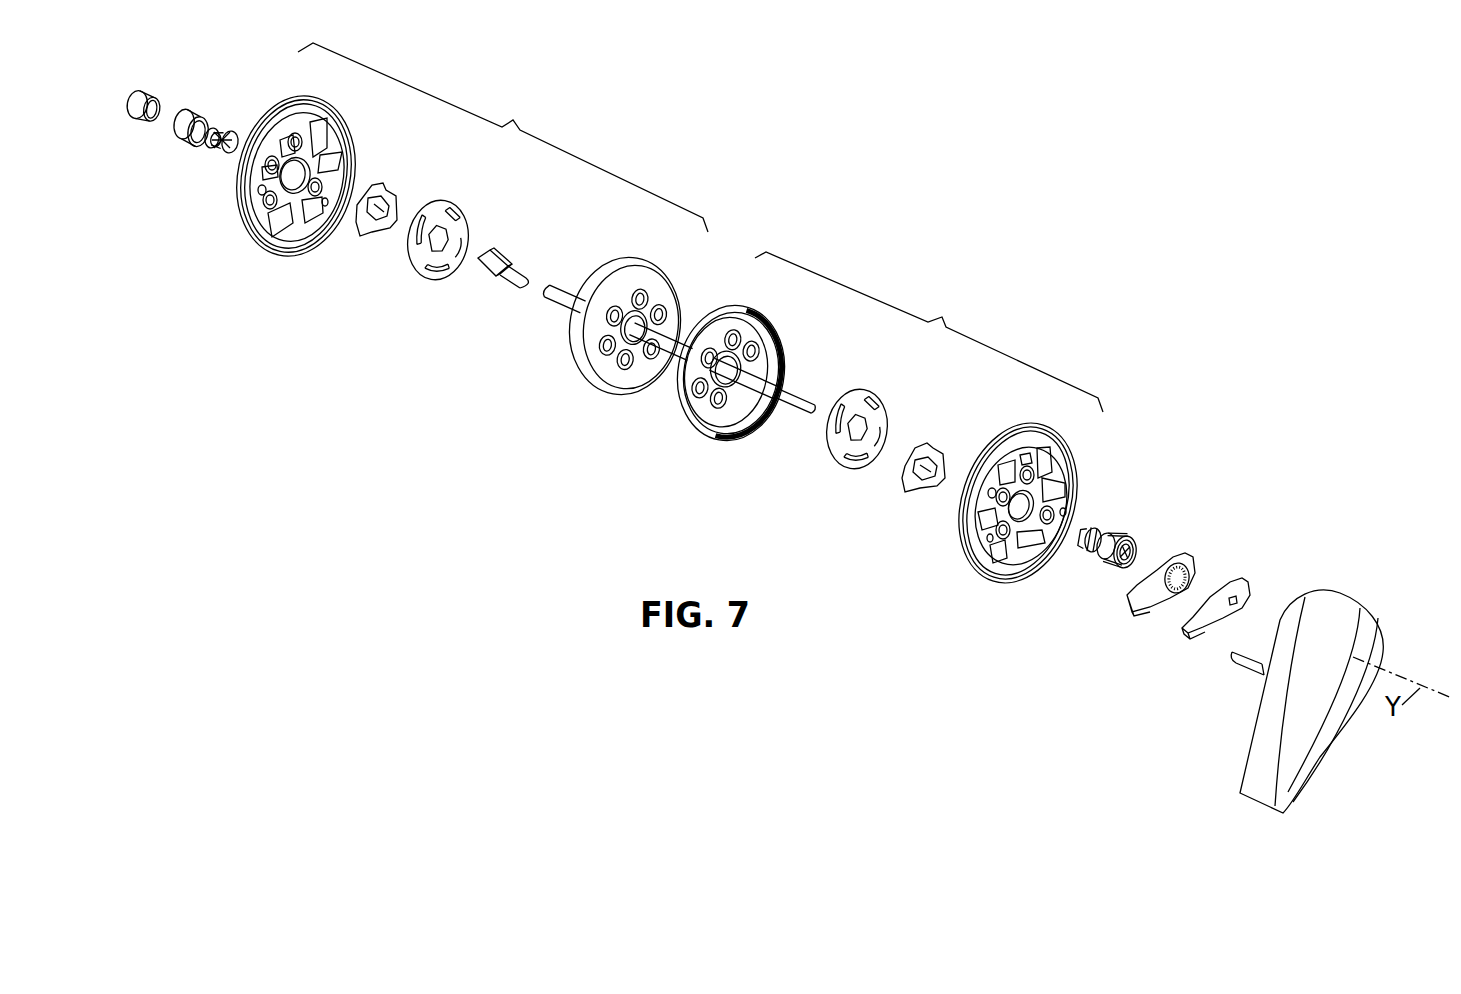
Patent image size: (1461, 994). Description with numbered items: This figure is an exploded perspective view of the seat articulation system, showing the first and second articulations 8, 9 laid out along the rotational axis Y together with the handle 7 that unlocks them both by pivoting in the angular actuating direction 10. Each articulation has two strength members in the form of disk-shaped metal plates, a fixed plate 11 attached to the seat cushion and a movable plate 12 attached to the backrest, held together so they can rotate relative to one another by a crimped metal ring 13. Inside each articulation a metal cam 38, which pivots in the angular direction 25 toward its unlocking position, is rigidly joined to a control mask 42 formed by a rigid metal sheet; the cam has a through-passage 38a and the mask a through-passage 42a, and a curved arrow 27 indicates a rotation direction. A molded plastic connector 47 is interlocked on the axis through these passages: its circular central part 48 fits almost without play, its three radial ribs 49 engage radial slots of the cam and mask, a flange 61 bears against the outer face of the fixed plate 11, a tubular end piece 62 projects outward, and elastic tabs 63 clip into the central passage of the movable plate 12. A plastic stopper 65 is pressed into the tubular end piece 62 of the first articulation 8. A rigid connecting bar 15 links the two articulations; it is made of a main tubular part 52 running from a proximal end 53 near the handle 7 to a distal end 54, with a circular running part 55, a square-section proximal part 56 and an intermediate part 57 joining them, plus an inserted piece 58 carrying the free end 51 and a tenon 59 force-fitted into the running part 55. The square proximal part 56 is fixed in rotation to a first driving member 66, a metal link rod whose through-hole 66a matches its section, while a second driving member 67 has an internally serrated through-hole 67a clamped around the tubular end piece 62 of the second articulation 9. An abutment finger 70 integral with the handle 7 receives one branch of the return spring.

The handle 7 is at (1327, 715).
The first articulation 8 is at (503, 137).
The second articulation 9 is at (929, 332).
The angular actuating direction 10 is at (1207, 773).
The fixed plate 11 is at (297, 227).
The movable plate 12 is at (622, 378).
The crimped metal ring 13 is at (256, 247).
The connecting bar 15 is at (538, 310).
The angular direction 25 is at (373, 156).
The rotation direction 27 is at (349, 262).
The cam 38 is at (380, 232).
The through-passage of the cam 38a is at (396, 199).
The control mask 42 is at (421, 264).
The through-passage of the control mask 42a is at (450, 228).
The connector 47 is at (222, 97).
The central part 48 is at (195, 157).
The radial ribs 49 is at (212, 143).
The free end 51 is at (487, 268).
The main tubular part 52 is at (794, 380).
The proximal end 53 is at (812, 414).
The distal end 54 is at (545, 285).
The running part 55 is at (673, 355).
The proximal part 56 is at (808, 417).
The intermediate part 57 is at (767, 413).
The inserted piece 58 is at (521, 253).
The tenon 59 is at (517, 279).
The flange 61 is at (192, 150).
The tubular end piece 62 is at (176, 128).
The elastic tabs 63 is at (1086, 533).
The stopper 65 is at (144, 94).
The first driving member 66 is at (1202, 627).
The through-hole 66a is at (1240, 602).
The second driving member 67 is at (1148, 600).
The internally serrated circular through-hole 67a is at (1188, 574).
The abutment finger 70 is at (1244, 657).